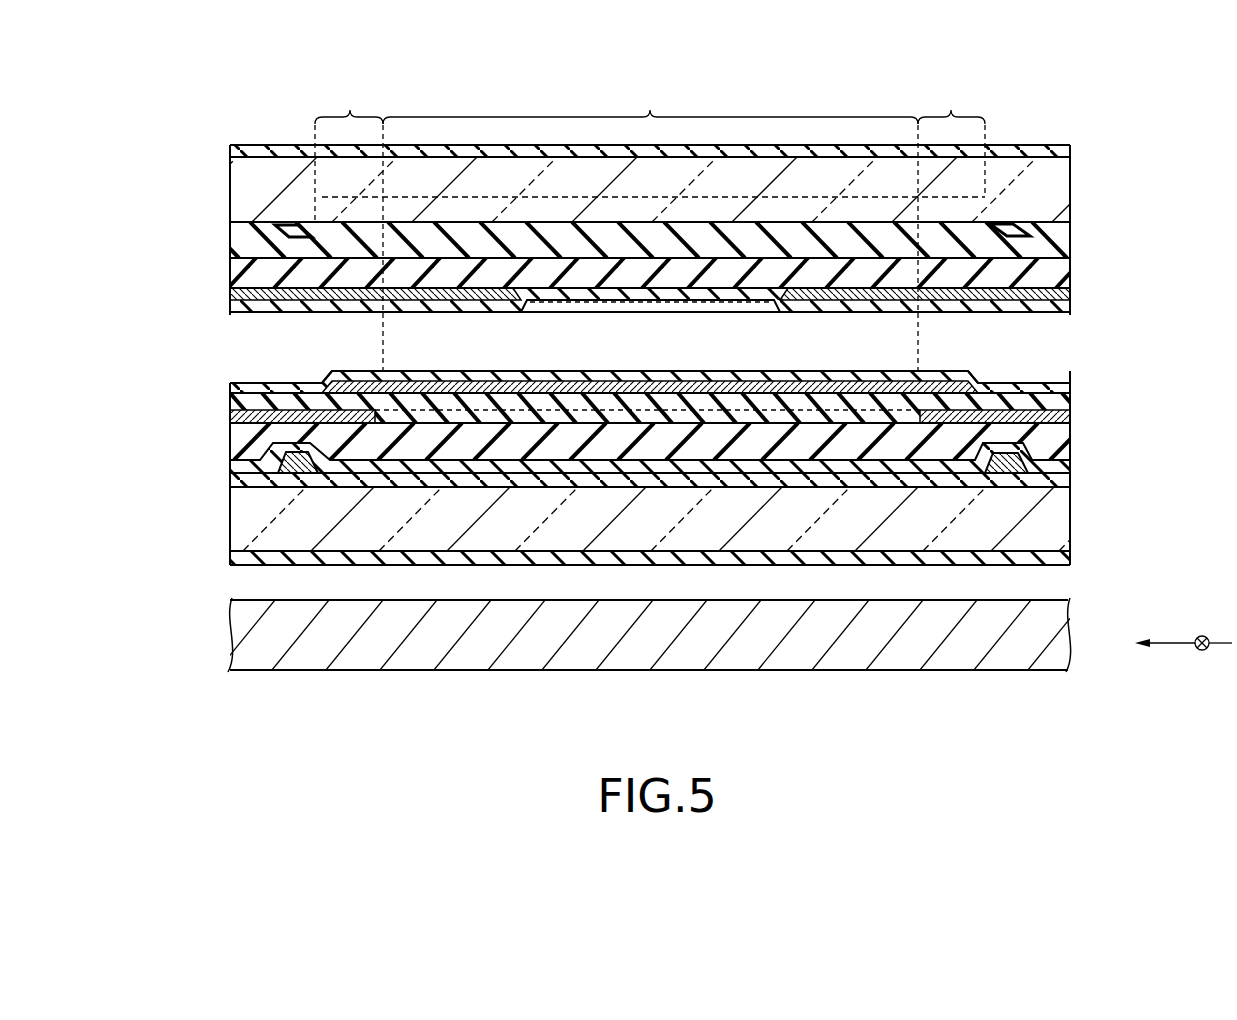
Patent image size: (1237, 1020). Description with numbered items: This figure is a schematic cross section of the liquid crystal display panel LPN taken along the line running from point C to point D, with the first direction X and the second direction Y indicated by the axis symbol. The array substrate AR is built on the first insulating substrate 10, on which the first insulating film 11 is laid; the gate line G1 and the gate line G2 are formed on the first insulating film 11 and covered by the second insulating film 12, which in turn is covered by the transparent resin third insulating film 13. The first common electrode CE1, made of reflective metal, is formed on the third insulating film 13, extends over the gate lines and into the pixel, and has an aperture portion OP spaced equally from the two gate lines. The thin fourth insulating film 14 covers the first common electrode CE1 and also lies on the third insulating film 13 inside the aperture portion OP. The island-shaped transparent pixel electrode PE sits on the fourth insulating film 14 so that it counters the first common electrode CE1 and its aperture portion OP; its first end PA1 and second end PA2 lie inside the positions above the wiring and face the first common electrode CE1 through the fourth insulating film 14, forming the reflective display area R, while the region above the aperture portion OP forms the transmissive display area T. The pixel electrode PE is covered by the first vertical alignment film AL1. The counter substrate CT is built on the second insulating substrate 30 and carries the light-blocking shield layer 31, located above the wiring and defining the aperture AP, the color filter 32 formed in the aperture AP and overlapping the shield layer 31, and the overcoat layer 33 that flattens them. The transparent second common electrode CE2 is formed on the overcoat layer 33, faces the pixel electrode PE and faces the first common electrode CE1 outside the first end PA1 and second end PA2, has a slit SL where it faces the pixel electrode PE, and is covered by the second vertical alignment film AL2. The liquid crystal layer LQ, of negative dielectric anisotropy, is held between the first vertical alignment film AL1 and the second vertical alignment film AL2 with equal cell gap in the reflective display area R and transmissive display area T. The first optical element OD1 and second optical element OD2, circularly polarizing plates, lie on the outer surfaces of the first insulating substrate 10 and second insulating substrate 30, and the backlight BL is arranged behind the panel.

The reflective display area R is at (650, 197).
The transmissive display area T is at (650, 103).
The second optical element OD2 is at (1050, 147).
The liquid crystal display panel LPN is at (1088, 154).
The counter substrate CT is at (210, 193).
The aperture AP is at (661, 197).
The second insulating substrate 30 is at (1066, 183).
The shield layer 31 is at (290, 233).
The color filter 32 is at (1070, 244).
The overcoat layer 33 is at (1070, 275).
The second common electrode CE2 is at (230, 296).
The second vertical alignment film AL2 is at (1066, 313).
The liquid crystal layer LQ is at (1054, 352).
The first vertical alignment film AL1 is at (1058, 382).
The fourth insulating film 14 is at (1068, 401).
The third insulating film 13 is at (1068, 433).
The second insulating film 12 is at (1068, 465).
The first insulating film 11 is at (1068, 486).
The first insulating substrate 10 is at (1068, 523).
The first optical element OD1 is at (1068, 558).
The second end of pixel electrode PA2 is at (338, 371).
The aperture portion OP is at (542, 408).
The slit SL is at (664, 303).
The first end of pixel electrode PA1 is at (972, 372).
The array substrate AR is at (210, 522).
The gate line G1 is at (293, 472).
The first common electrode CE1 is at (365, 421).
The pixel electrode PE is at (838, 393).
The gate line G2 is at (1000, 472).
The line C-D end point C is at (228, 584).
The line C-D end point D is at (1067, 584).
The backlight BL is at (230, 640).
The first direction X is at (1202, 658).
The second direction Y is at (1173, 644).